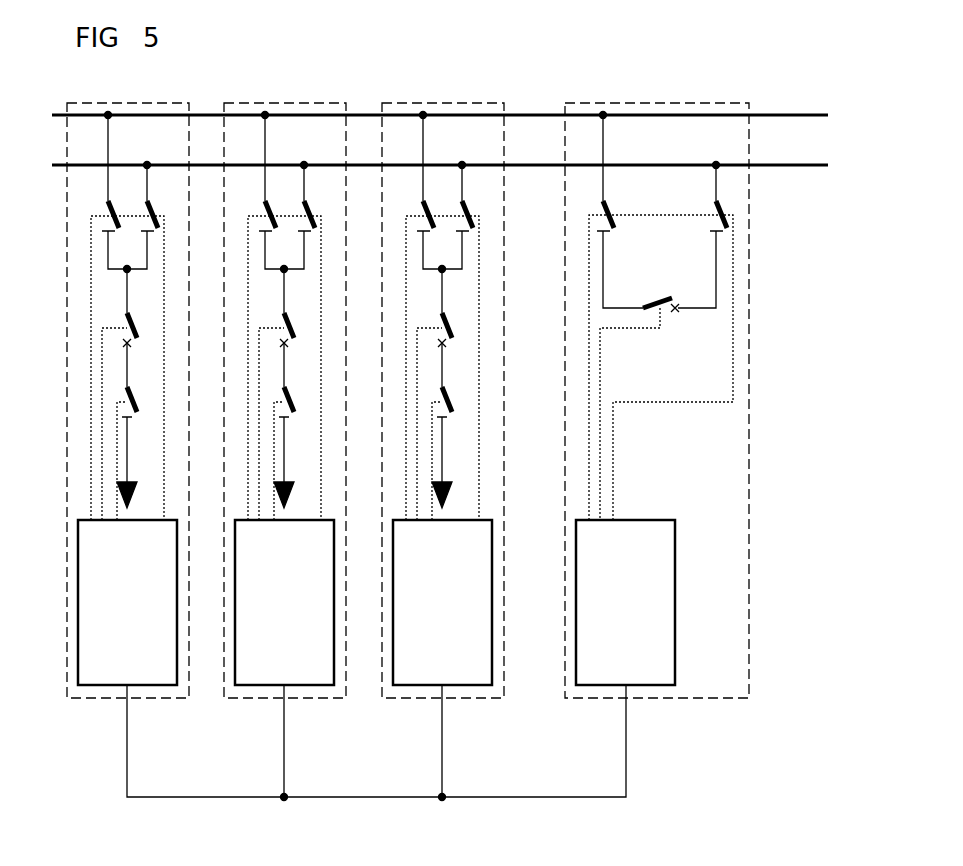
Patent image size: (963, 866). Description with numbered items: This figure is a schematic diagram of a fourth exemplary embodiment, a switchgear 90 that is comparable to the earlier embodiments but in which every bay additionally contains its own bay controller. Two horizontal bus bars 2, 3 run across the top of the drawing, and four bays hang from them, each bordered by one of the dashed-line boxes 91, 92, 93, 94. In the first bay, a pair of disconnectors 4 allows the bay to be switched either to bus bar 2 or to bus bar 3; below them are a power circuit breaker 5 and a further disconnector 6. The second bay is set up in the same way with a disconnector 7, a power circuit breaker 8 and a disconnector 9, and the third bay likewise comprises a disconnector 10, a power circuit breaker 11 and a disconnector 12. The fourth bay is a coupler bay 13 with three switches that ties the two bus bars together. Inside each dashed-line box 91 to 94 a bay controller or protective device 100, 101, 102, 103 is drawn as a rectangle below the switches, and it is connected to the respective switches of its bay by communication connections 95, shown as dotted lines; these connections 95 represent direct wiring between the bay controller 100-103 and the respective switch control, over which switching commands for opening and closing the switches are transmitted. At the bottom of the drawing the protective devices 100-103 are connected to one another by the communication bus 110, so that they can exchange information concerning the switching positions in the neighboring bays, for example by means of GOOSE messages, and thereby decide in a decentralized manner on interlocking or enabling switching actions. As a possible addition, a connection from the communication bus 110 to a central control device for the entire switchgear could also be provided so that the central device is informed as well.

The bus bar 2 is at (782, 113).
The bus bar 3 is at (782, 167).
The disconnectors 4 is at (147, 250).
The power circuit breaker 5 is at (129, 344).
The disconnector 6 is at (132, 418).
The disconnector 7 is at (299, 200).
The power circuit breaker 8 is at (310, 328).
The disconnector 9 is at (307, 447).
The disconnector 10 is at (464, 200).
The power circuit breaker 11 is at (474, 328).
The disconnector 12 is at (471, 447).
The coupler bay 13 is at (678, 311).
The switchgear 90 is at (443, 438).
The dashed-line box 91 is at (67, 698).
The dashed-line box 92 is at (285, 434).
The dashed-line box 93 is at (443, 434).
The dashed-line box 94 is at (565, 698).
The communication connections 95 is at (155, 310).
The bay controller 100 is at (157, 685).
The bay controller 101 is at (288, 643).
The bay controller 102 is at (446, 643).
The bay controller 103 is at (658, 685).
The communication bus 110 is at (626, 778).